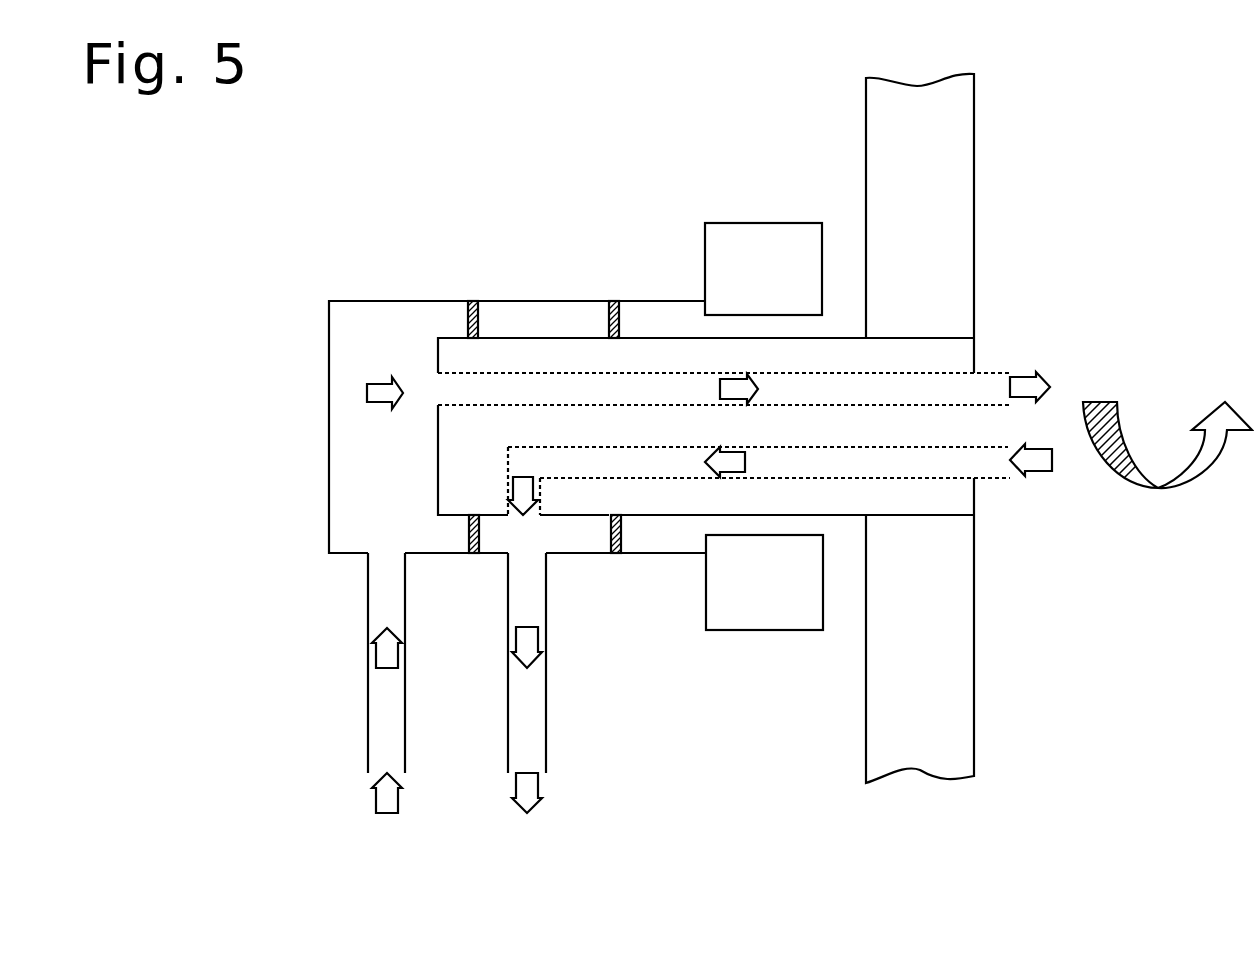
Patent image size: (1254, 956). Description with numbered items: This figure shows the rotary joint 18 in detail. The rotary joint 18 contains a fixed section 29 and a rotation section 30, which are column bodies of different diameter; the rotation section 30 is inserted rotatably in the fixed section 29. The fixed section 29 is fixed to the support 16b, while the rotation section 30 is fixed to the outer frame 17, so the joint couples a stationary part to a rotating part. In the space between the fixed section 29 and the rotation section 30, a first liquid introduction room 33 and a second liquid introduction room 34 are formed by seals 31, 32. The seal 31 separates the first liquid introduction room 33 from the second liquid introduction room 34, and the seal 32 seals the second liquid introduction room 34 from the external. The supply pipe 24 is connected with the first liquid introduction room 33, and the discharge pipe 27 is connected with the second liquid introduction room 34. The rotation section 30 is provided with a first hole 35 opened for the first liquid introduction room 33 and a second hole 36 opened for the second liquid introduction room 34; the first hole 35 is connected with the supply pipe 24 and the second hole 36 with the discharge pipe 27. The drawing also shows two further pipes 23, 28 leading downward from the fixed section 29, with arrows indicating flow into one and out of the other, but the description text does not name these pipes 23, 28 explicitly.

The rotary joint 18 is at (248, 294).
The fixed section 29 is at (410, 300).
The first liquid introduction room 33 is at (382, 310).
The second liquid introduction room 34 is at (552, 315).
The seal 31 is at (477, 318).
The seal 32 is at (619, 318).
The support 16b is at (750, 243).
The outer frame 17 is at (947, 150).
The rotation section 30 is at (843, 337).
The supply pipe 24 is at (990, 370).
The discharge pipe 27 is at (997, 479).
The first hole 35 is at (433, 394).
The second hole 36 is at (523, 508).
The supply pipe 23 is at (368, 698).
The discharge pipe 28 is at (508, 713).